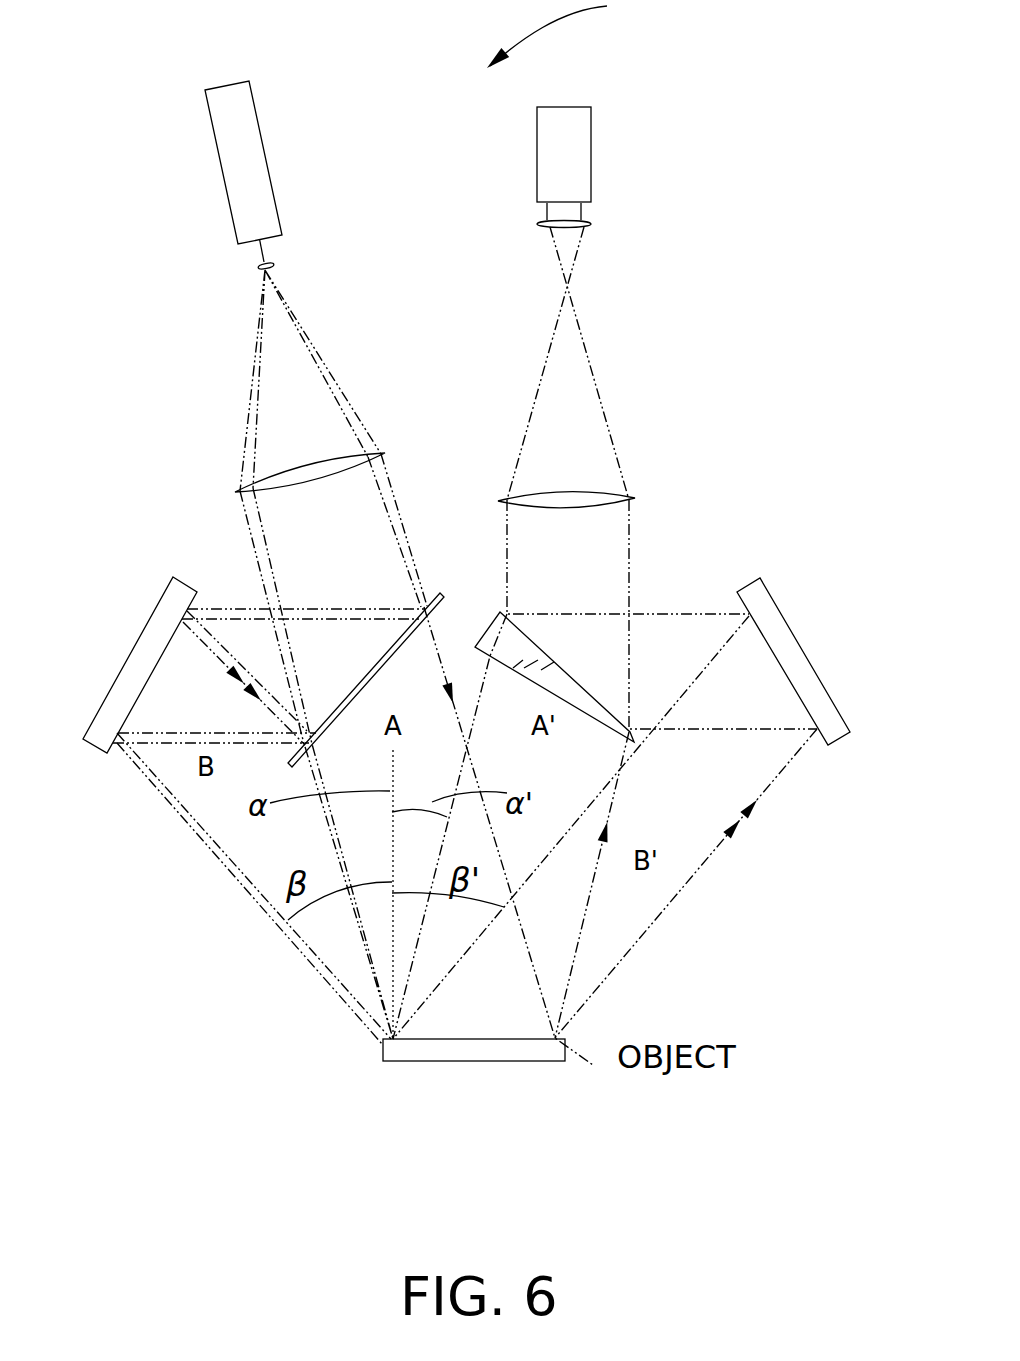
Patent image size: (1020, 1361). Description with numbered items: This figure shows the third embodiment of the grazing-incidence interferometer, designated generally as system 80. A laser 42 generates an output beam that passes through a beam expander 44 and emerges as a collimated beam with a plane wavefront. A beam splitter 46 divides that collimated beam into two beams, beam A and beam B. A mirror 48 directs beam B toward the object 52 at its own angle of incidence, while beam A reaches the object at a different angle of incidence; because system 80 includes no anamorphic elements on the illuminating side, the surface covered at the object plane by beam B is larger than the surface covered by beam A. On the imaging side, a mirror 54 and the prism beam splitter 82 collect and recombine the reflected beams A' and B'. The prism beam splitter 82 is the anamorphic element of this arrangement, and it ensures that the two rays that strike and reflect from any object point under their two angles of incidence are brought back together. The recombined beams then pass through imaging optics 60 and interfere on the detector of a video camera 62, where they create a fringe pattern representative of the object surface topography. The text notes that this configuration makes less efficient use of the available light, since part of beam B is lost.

The system 80 is at (573, 34).
The laser 42 is at (220, 158).
The beam expander 44 is at (295, 467).
The beam splitter 46 is at (383, 652).
The mirror 48 is at (138, 635).
The object stage 52 is at (407, 1062).
The mirror 54 is at (790, 622).
The imaging optics 60 is at (613, 493).
The video camera 62 is at (592, 160).
The prism beam splitter 82 is at (580, 684).